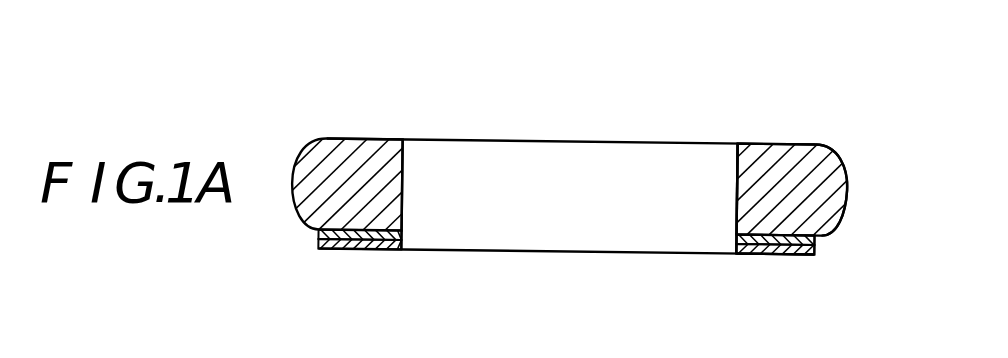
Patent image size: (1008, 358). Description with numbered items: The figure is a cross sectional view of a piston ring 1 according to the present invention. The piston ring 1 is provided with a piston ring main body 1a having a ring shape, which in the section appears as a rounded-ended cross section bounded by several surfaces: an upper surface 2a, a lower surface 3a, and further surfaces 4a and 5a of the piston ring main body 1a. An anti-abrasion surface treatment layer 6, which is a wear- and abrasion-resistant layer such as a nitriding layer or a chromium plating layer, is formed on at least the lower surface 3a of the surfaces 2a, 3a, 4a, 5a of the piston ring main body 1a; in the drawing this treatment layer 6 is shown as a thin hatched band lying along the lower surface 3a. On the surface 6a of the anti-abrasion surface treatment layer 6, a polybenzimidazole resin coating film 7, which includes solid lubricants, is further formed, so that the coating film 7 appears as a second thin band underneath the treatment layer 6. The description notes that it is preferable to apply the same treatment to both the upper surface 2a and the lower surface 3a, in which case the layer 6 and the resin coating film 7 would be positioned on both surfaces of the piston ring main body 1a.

The piston ring 1 is at (358, 30).
The piston ring main body 1a is at (535, 140).
The upper surface 2a is at (779, 143).
The lower surface 3a is at (754, 257).
The surface 4a is at (847, 181).
The surface 5a is at (737, 187).
The anti-abrasion surface treatment layer 6 is at (318, 233).
The surface of the anti-abrasion surface treatment layer 6a is at (783, 257).
The polybenzimidazole resin coating film 7 is at (318, 247).